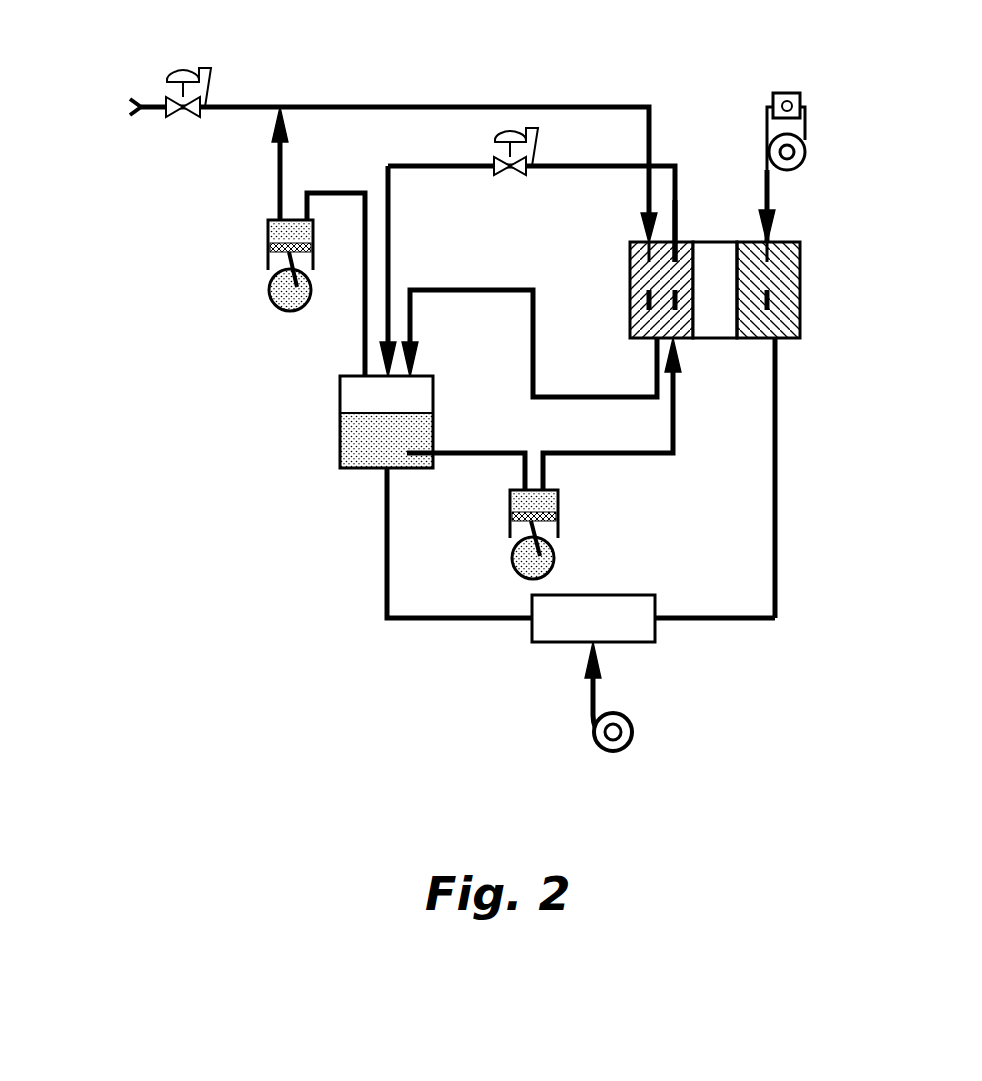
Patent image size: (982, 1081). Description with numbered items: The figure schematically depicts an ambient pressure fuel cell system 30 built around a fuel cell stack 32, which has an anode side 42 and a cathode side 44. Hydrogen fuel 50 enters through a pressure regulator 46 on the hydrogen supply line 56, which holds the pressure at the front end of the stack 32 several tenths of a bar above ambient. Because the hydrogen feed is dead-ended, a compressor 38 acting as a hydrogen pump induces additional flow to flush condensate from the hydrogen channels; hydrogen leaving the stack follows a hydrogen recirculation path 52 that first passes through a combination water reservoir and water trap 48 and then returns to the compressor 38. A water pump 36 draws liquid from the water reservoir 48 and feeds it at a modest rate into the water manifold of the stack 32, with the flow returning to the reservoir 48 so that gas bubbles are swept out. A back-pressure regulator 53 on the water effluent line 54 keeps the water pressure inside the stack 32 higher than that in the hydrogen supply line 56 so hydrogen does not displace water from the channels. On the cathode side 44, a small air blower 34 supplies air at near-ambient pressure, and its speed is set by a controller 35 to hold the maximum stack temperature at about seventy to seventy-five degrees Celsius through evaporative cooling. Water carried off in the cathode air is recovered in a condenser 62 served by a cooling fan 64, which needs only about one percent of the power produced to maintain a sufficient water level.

The ambient pressure fuel cell system 30 is at (596, 72).
The fuel cell stack 32 is at (722, 424).
The air blower 34 is at (790, 152).
The controller 35 is at (797, 92).
The water pump 36 is at (507, 517).
The compressor 38 is at (268, 243).
The anode side 42 is at (630, 252).
The cathode side 44 is at (803, 252).
The pressure regulator 46 is at (212, 70).
The water reservoir and water trap 48 is at (365, 448).
The hydrogen fuel 50 is at (126, 105).
The hydrogen recirculation path 52 is at (363, 346).
The back-pressure regulator 53 is at (545, 140).
The water effluent line 54 is at (680, 176).
The hydrogen supply line 56 is at (448, 105).
The condenser 62 is at (581, 555).
The cooling fan 64 is at (613, 735).